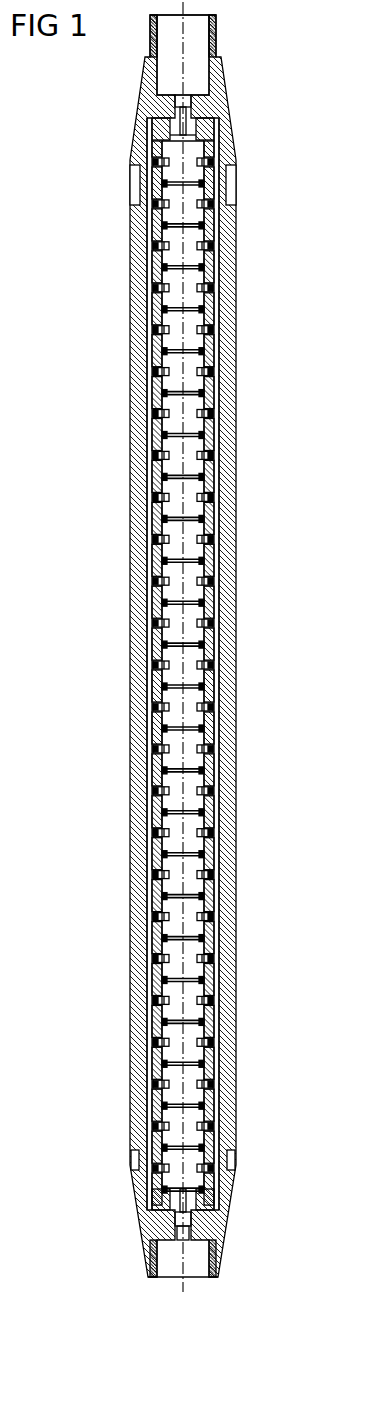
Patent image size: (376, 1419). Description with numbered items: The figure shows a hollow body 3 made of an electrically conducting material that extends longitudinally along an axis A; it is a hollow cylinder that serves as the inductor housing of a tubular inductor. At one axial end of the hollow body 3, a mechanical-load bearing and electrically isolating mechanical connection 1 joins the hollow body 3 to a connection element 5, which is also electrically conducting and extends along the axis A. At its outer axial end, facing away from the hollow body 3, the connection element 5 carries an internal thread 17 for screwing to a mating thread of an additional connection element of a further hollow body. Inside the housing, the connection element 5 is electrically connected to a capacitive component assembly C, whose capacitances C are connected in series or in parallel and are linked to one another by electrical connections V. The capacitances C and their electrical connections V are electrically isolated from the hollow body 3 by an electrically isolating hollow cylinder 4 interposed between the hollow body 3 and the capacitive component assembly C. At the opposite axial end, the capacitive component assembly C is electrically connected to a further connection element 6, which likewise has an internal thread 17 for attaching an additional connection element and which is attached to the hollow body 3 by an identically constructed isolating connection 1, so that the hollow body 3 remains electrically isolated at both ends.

The mechanical-load bearing and electrically isolating mechanical connection 1 is at (262, 160).
The hollow body 3 is at (228, 814).
The hollow cylinder 4 is at (222, 508).
The connection element 5 is at (150, 100).
The further connection element 6 is at (150, 1222).
The internal thread 17 is at (215, 32).
The axis A is at (168, 43).
The electrical connections V is at (156, 372).
The capacitive component assembly C is at (172, 595).